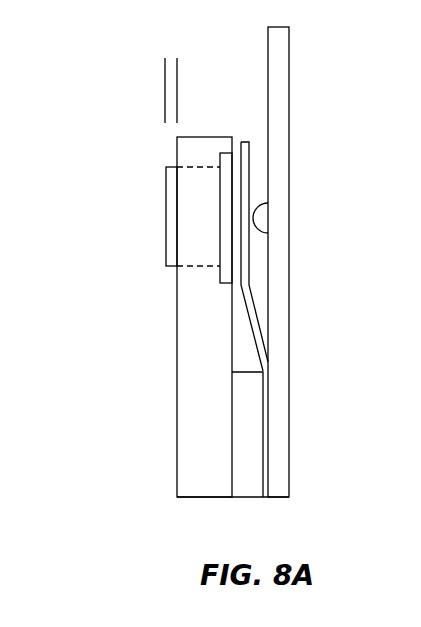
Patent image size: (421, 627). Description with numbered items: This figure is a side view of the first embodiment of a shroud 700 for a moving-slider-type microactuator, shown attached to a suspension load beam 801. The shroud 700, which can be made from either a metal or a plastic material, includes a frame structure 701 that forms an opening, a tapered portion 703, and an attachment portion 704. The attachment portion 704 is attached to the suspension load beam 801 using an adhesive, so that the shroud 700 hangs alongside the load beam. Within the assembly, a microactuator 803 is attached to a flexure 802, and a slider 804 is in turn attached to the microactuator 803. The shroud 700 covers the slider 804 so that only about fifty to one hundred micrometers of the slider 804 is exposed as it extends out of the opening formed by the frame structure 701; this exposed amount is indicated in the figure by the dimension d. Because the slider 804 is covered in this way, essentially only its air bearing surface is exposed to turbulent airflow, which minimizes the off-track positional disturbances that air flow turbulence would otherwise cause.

The exposed slider distance d is at (210, 91).
The shroud 700 is at (193, 337).
The frame structure 701 is at (193, 239).
The tapered portion 703 is at (195, 415).
The attachment portion 704 is at (242, 477).
The suspension load beam 801 is at (277, 58).
The flexure 802 is at (257, 323).
The microactuator 803 is at (220, 218).
The slider 804 is at (164, 255).